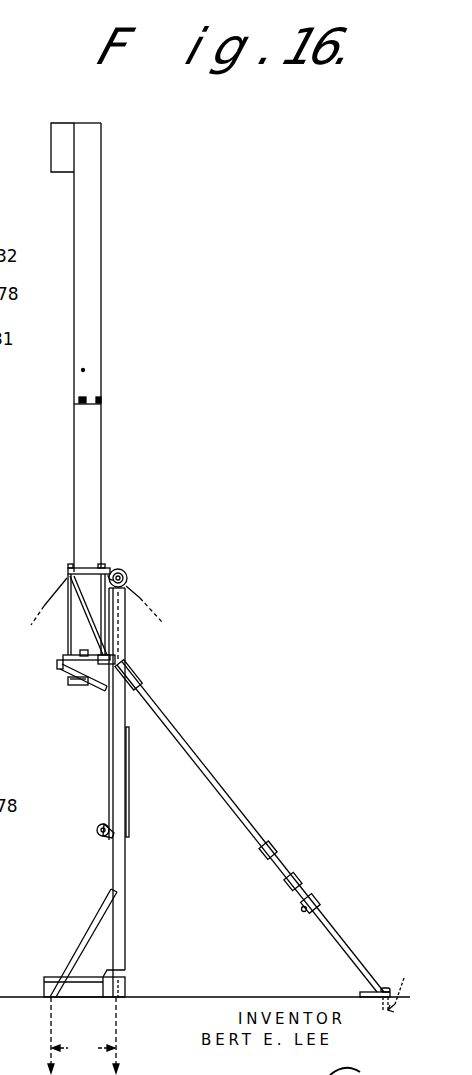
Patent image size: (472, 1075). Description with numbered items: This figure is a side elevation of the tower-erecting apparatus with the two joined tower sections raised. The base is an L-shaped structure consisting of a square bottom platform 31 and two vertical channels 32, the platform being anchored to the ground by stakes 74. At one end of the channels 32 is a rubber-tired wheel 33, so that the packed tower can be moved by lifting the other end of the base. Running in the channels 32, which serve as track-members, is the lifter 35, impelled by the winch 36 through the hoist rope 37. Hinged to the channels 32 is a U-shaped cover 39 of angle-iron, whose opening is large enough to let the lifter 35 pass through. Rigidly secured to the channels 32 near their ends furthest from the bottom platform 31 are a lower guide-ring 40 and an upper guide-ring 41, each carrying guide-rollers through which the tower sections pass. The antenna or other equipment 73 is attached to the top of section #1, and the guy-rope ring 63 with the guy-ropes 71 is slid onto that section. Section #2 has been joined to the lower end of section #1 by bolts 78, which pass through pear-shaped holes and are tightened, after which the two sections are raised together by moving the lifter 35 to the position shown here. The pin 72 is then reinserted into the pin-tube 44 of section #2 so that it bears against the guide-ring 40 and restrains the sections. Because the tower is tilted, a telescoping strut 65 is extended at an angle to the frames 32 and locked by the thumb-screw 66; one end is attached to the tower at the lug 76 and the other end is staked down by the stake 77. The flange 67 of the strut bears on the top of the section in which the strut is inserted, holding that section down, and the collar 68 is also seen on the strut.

The tower section # 1 is at (106, 347).
The tower section # 2 is at (105, 438).
The antenna or equipment 73 is at (39, 145).
The pin-tube 44 is at (57, 375).
The bolts 78 is at (78, 402).
The upper guide-ring 41 is at (80, 568).
The guy-rope ring 63 is at (100, 567).
The rubber-tired wheel 33 is at (129, 571).
The guy-ropes 71 is at (58, 582).
The pin 72 is at (85, 651).
The lower guide-ring 40 is at (47, 665).
The lug 76 is at (115, 660).
The U-shaped cover 39 is at (60, 669).
The lifter 35 is at (116, 680).
The telescoping strut 65 is at (183, 738).
The flange 67 is at (271, 843).
The boom collar 68 is at (296, 878).
The thumb-screw 66 is at (332, 902).
The stake 77 is at (384, 987).
The vertical channels 32 is at (123, 932).
The hoist rope 37 is at (112, 789).
The winch 36 is at (79, 829).
The bottom platform 31 is at (80, 1003).
The stakes 74 is at (83, 1035).